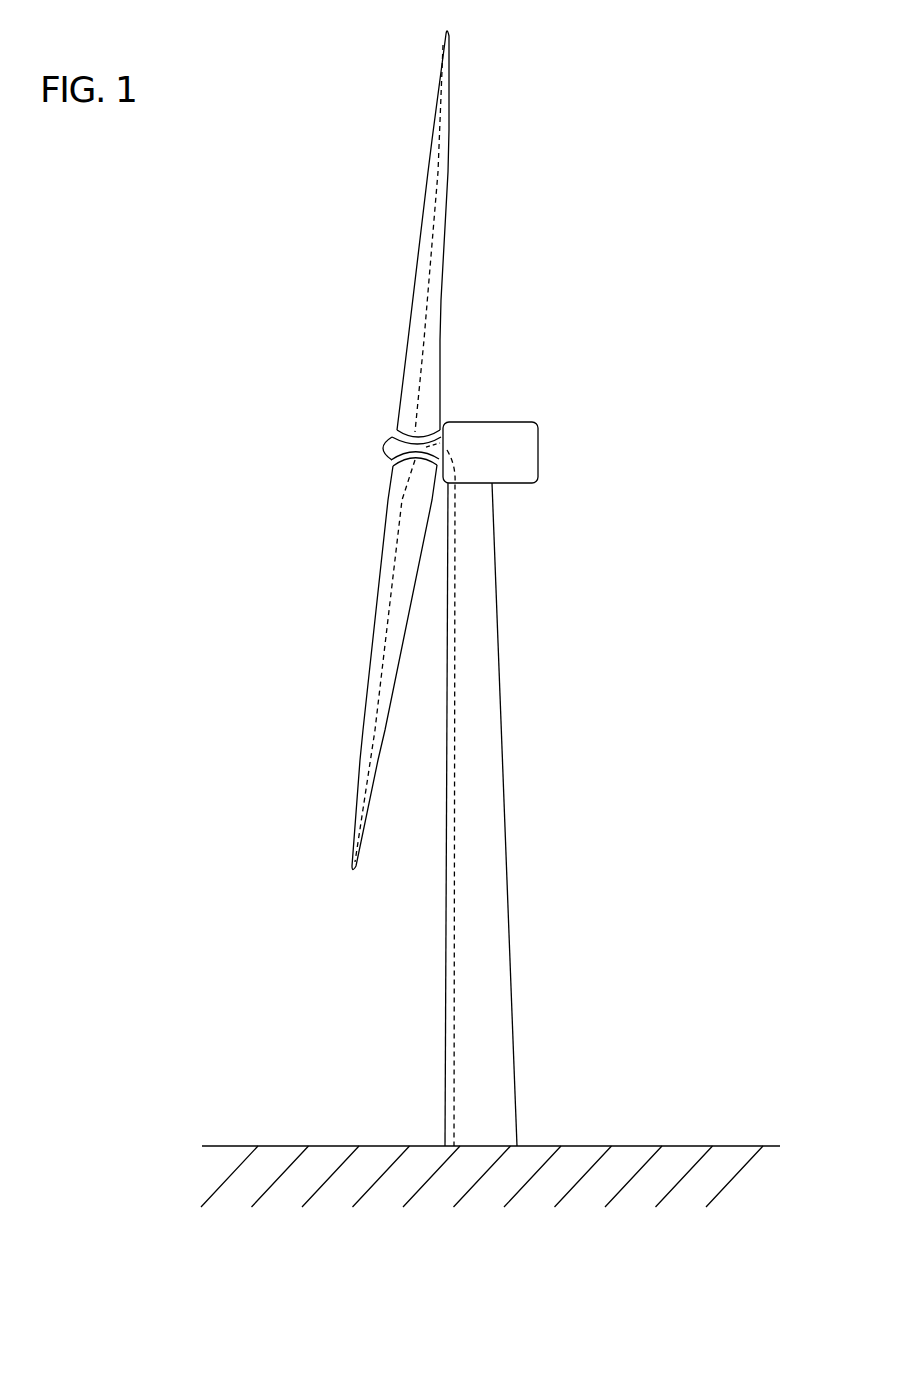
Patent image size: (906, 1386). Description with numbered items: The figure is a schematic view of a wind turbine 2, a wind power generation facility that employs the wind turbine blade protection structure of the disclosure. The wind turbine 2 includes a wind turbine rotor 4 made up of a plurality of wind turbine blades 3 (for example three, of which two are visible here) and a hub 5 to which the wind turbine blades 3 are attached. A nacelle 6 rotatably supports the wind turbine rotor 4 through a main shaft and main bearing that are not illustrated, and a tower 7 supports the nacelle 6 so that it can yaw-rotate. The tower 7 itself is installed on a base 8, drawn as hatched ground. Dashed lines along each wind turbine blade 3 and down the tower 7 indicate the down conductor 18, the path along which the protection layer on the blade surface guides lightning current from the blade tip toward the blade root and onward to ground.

The wind turbine 2 is at (603, 139).
The wind turbine blade 3 is at (428, 172).
The wind turbine rotor 4 is at (320, 414).
The hub 5 is at (385, 450).
The nacelle 6 is at (538, 450).
The tower 7 is at (505, 812).
The base 8 is at (583, 1146).
The down conductor 18 is at (418, 380).